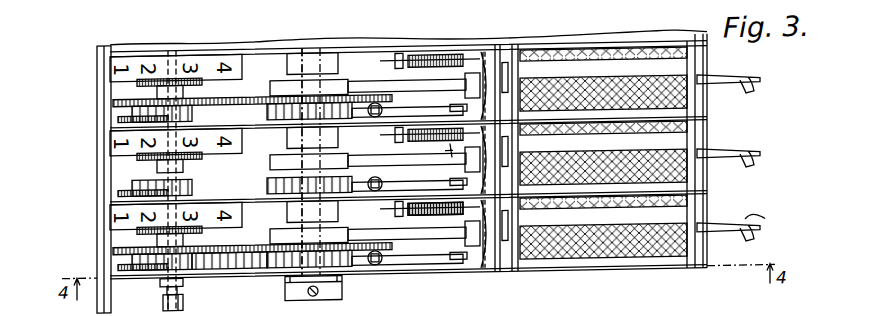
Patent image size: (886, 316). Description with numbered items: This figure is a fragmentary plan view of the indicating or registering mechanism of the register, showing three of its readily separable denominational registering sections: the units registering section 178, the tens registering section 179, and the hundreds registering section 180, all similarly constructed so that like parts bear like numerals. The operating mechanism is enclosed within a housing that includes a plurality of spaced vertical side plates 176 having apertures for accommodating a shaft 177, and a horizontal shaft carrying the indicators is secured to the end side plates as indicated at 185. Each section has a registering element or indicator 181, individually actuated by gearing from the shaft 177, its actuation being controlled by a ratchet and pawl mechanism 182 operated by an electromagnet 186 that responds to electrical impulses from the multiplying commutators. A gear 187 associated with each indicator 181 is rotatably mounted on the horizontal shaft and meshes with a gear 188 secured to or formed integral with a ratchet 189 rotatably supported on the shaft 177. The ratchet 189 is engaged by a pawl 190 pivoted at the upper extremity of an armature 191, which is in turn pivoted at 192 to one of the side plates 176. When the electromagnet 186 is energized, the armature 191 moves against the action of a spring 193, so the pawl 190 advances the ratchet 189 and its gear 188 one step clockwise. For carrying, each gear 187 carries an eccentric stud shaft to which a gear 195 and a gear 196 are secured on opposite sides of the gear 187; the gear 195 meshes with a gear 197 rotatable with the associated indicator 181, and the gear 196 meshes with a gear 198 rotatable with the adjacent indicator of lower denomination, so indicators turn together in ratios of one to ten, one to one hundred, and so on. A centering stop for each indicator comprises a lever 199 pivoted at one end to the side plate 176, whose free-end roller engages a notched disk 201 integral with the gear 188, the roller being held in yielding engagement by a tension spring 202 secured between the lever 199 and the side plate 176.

The vertical side plate 176 is at (428, 60).
The shaft 177 is at (305, 50).
The units registering section 178 is at (727, 227).
The tens registering section 179 is at (727, 151).
The hundreds registering section 180 is at (720, 77).
The indicator 181 is at (123, 212).
The ratchet and pawl mechanism 182 is at (272, 270).
The securing point of shaft 185 is at (185, 284).
The electromagnet 186 is at (605, 250).
The gear 187 is at (113, 103).
The gear 188 is at (266, 160).
The ratchet 189 is at (286, 242).
The pawl 190 is at (447, 158).
The armature 191 is at (488, 272).
The armature pivot 192 is at (495, 270).
The spring 193 is at (408, 213).
The gear 195 is at (97, 229).
The gear 196 is at (132, 248).
The gear 197 is at (204, 228).
The gear 198 is at (215, 256).
The lever 199 is at (414, 266).
The notched disk 201 is at (356, 268).
The tension spring 202 is at (388, 185).